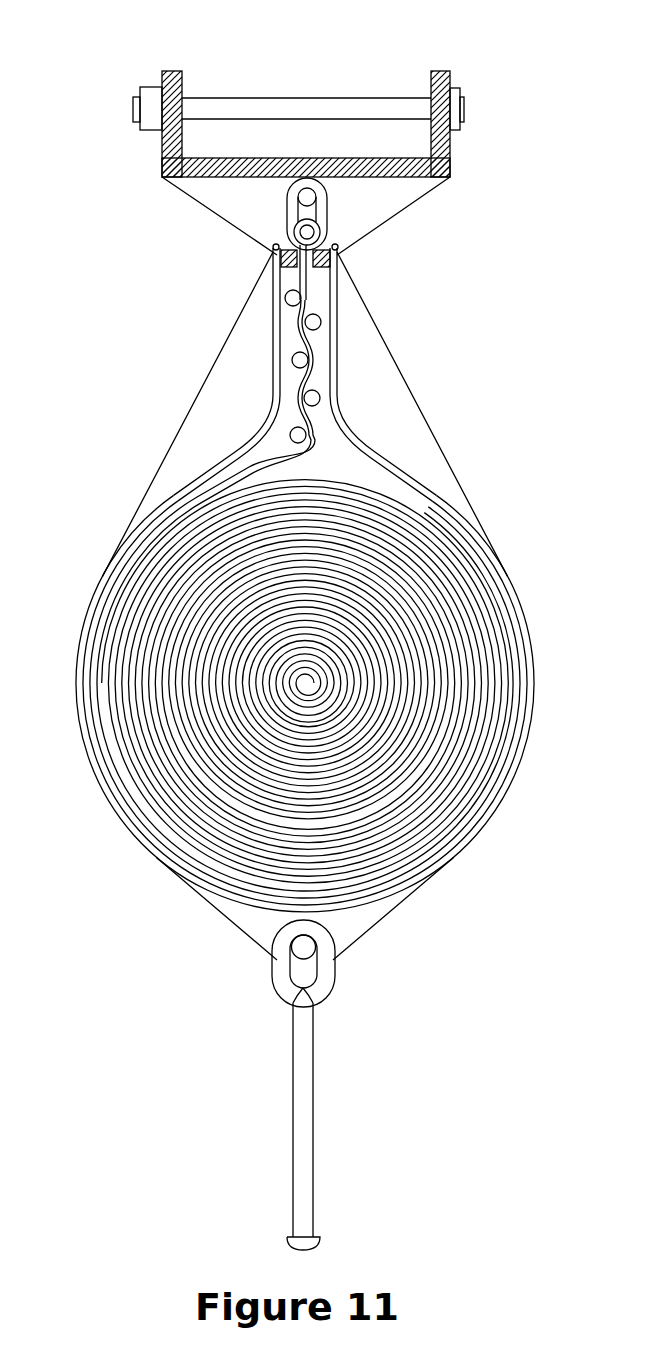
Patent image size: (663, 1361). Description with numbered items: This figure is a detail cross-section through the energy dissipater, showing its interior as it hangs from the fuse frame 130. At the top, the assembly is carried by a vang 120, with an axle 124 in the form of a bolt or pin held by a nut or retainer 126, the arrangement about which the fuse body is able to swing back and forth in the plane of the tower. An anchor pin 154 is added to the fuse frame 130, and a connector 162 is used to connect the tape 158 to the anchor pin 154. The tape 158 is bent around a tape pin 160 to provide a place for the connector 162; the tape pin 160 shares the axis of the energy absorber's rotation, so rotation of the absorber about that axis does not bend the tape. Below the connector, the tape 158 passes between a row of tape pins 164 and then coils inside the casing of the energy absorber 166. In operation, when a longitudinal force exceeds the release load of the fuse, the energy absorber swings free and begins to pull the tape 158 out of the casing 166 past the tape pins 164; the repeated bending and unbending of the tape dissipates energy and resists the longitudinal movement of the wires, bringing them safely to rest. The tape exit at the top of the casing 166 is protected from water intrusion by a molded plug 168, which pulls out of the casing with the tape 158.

The vang 120 is at (447, 72).
The axle 124 is at (248, 102).
The nut or retainer 126 is at (152, 93).
The fuse frame 130 is at (430, 183).
The anchor pin 154 is at (307, 193).
The tape 158 is at (310, 377).
The tape pin 160 is at (327, 218).
The connector 162 is at (284, 216).
The tape pins 164 is at (291, 366).
The casing of the energy absorber 166 is at (248, 453).
The molded plug 168 is at (317, 262).